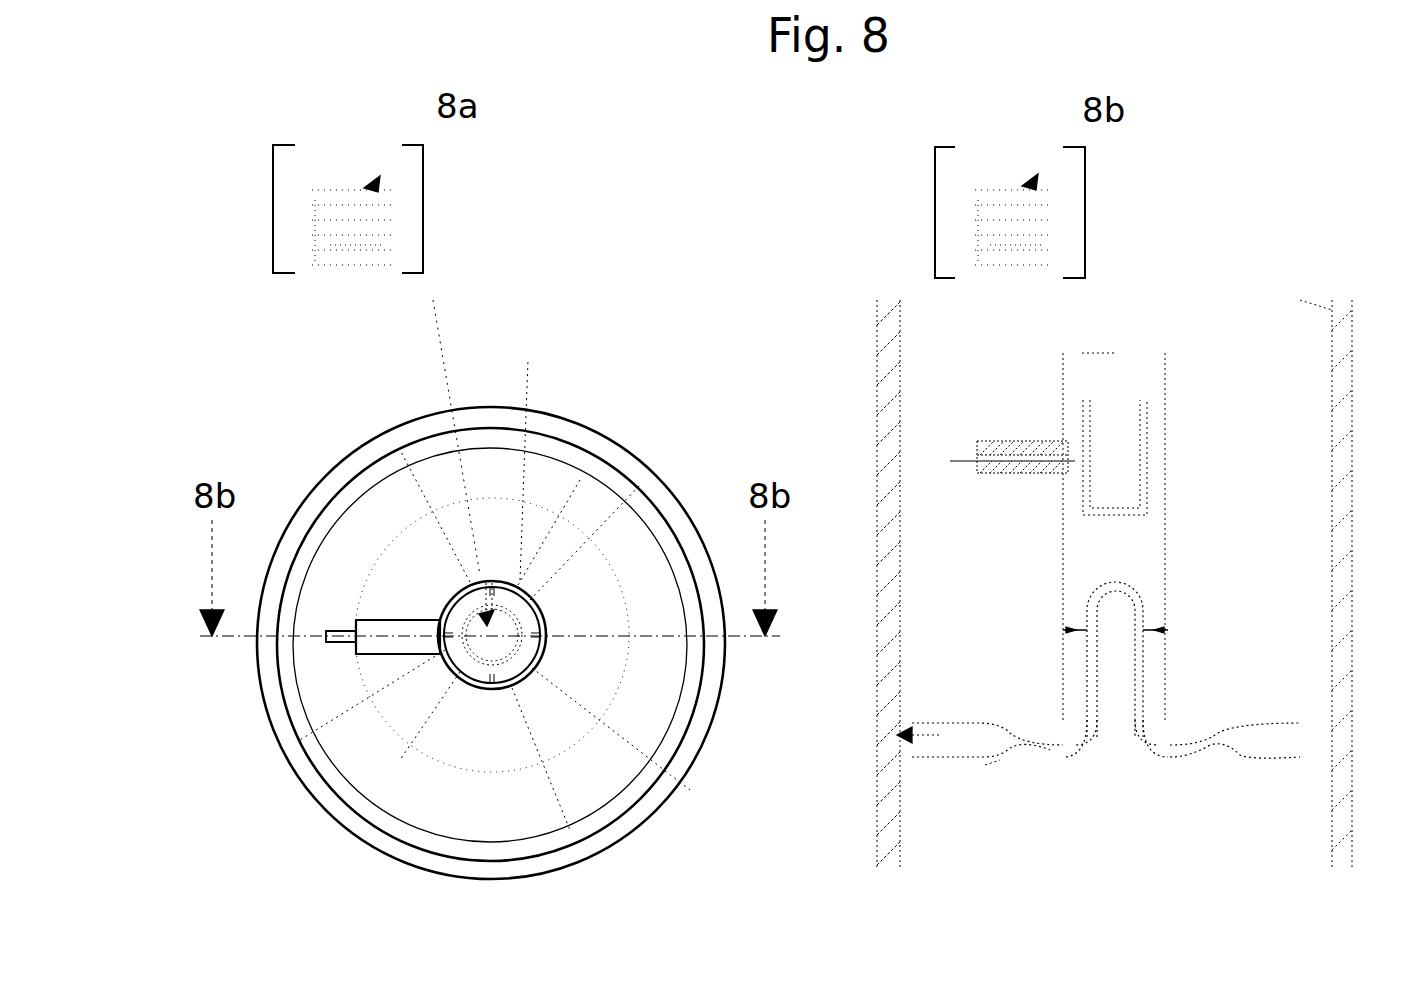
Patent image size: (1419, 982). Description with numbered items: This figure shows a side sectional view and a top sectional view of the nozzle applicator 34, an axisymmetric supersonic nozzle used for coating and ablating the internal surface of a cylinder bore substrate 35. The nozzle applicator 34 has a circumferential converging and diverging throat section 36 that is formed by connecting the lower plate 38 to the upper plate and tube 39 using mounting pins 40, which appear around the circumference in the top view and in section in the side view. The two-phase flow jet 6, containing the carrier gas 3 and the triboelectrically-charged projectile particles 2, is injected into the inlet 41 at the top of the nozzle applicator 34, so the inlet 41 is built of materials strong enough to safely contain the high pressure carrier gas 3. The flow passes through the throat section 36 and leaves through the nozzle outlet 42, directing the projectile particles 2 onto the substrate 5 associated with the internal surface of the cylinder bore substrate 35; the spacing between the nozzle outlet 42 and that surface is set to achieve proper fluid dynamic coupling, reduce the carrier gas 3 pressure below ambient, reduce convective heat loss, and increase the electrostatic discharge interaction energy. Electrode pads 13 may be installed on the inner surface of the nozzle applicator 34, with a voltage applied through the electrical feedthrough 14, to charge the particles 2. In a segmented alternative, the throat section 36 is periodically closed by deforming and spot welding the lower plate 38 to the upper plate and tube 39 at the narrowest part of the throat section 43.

The projectile particles 2 is at (655, 206).
The carrier gas 3 is at (372, 178).
The substrate 5 is at (1300, 300).
The two-phase flow jet 6 is at (687, 230).
The electrode pads 13 is at (340, 845).
The electrical feedthrough 14 is at (268, 760).
The nozzle applicator 34 is at (419, 494).
The cylinder bore substrate 35 is at (615, 425).
The circumferential converging and diverging throat section 36 is at (1162, 669).
The lower plate 38 is at (1107, 774).
The upper plate and tube 39 is at (470, 595).
The mounting pins 40 is at (1210, 597).
The inlet 41 is at (660, 490).
The nozzle outlet 42 is at (925, 702).
The narrowest part of the throat section 43 is at (992, 772).